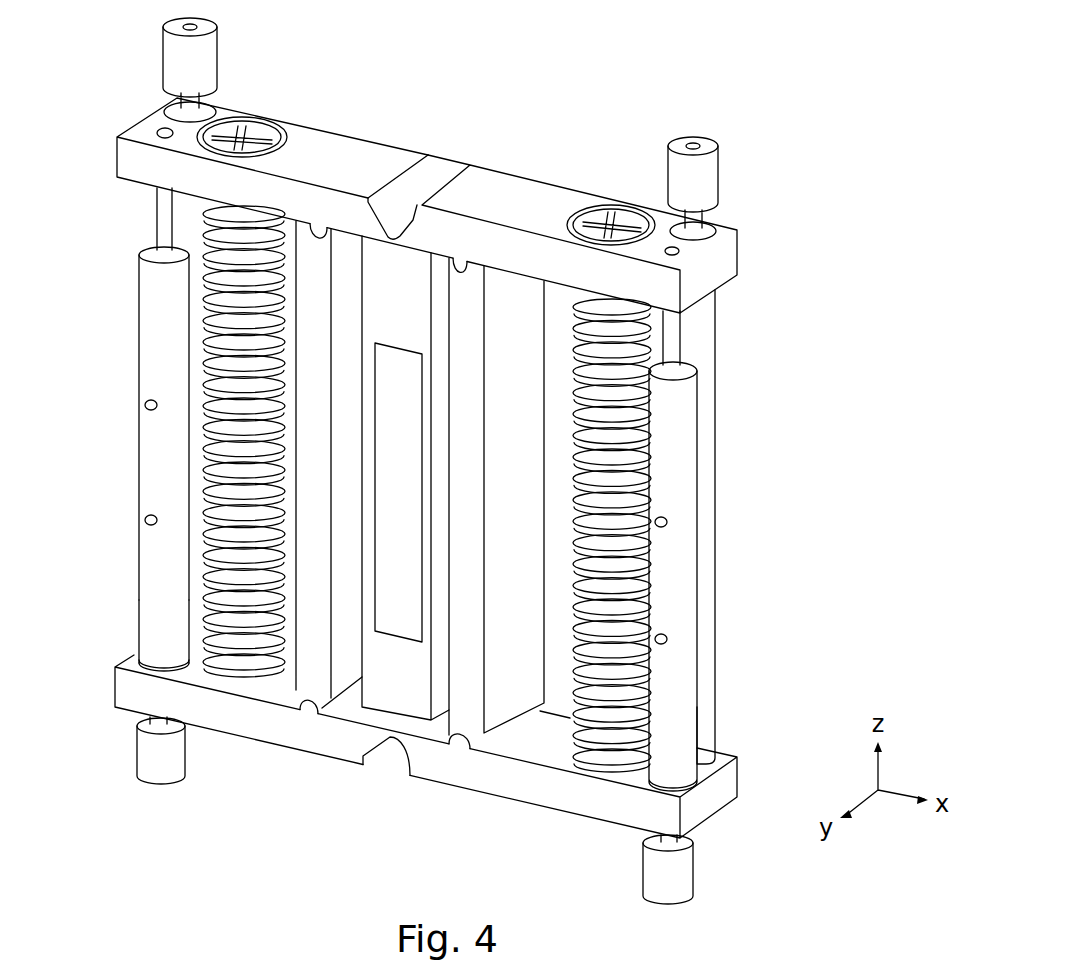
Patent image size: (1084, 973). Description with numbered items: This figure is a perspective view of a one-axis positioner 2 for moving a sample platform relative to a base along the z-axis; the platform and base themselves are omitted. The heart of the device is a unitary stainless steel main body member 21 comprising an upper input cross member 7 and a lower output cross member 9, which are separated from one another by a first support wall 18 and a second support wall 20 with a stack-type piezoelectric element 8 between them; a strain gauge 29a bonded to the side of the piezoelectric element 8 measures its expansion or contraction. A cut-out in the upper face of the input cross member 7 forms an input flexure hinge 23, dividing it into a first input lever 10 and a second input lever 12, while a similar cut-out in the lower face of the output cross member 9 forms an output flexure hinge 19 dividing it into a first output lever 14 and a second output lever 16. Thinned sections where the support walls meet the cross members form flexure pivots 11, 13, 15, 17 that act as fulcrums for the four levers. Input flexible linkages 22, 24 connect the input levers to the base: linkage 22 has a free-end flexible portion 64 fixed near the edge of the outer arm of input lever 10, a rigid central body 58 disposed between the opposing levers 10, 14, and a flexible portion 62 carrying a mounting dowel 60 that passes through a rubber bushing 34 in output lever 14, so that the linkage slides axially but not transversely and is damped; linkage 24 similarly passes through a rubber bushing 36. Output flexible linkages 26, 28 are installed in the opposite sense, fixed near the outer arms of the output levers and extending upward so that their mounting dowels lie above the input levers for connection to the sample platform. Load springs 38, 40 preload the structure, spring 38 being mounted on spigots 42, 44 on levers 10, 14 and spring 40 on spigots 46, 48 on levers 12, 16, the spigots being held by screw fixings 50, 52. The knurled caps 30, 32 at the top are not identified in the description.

The positioner 2 is at (795, 483).
The input cross member 7 is at (748, 255).
The piezoelectric element 8 is at (387, 332).
The output cross member 9 is at (760, 772).
The first input lever 10 is at (312, 174).
The flexure pivot 11 is at (324, 226).
The second input lever 12 is at (490, 219).
The flexure pivot 13 is at (462, 262).
The first output lever 14 is at (210, 726).
The flexure pivot 15 is at (306, 713).
The second output lever 16 is at (532, 799).
The flexure pivot 17 is at (463, 747).
The first support wall 18 is at (300, 407).
The output flexure hinge 19 is at (386, 748).
The second support wall 20 is at (451, 474).
The main body member 21 is at (697, 786).
The input flexible linkage 22 is at (146, 483).
The input flexure hinge 23 is at (436, 186).
The input flexible linkage 24 is at (686, 680).
The output flexible linkage 26 is at (152, 247).
The output flexible linkage 28 is at (720, 510).
The strain gauge 29a is at (372, 466).
The upper left adjusting knob 30 is at (165, 114).
The upper right adjusting knob 32 is at (720, 236).
The rubber bushing 34 is at (134, 658).
The rubber bushing 36 is at (668, 817).
The load spring 38 is at (212, 296).
The load spring 40 is at (666, 346).
The mounting spigot 42 is at (228, 352).
The mounting spigot 44 is at (216, 540).
The mounting spigot 46 is at (630, 446).
The mounting spigot 48 is at (628, 749).
The screw fixing 50 is at (257, 130).
The screw fixing 52 is at (597, 220).
The rigid central body 58 is at (143, 628).
The mounting dowel 60 is at (137, 777).
The flexible portion 62 is at (151, 723).
The flexible portion 64 is at (166, 210).